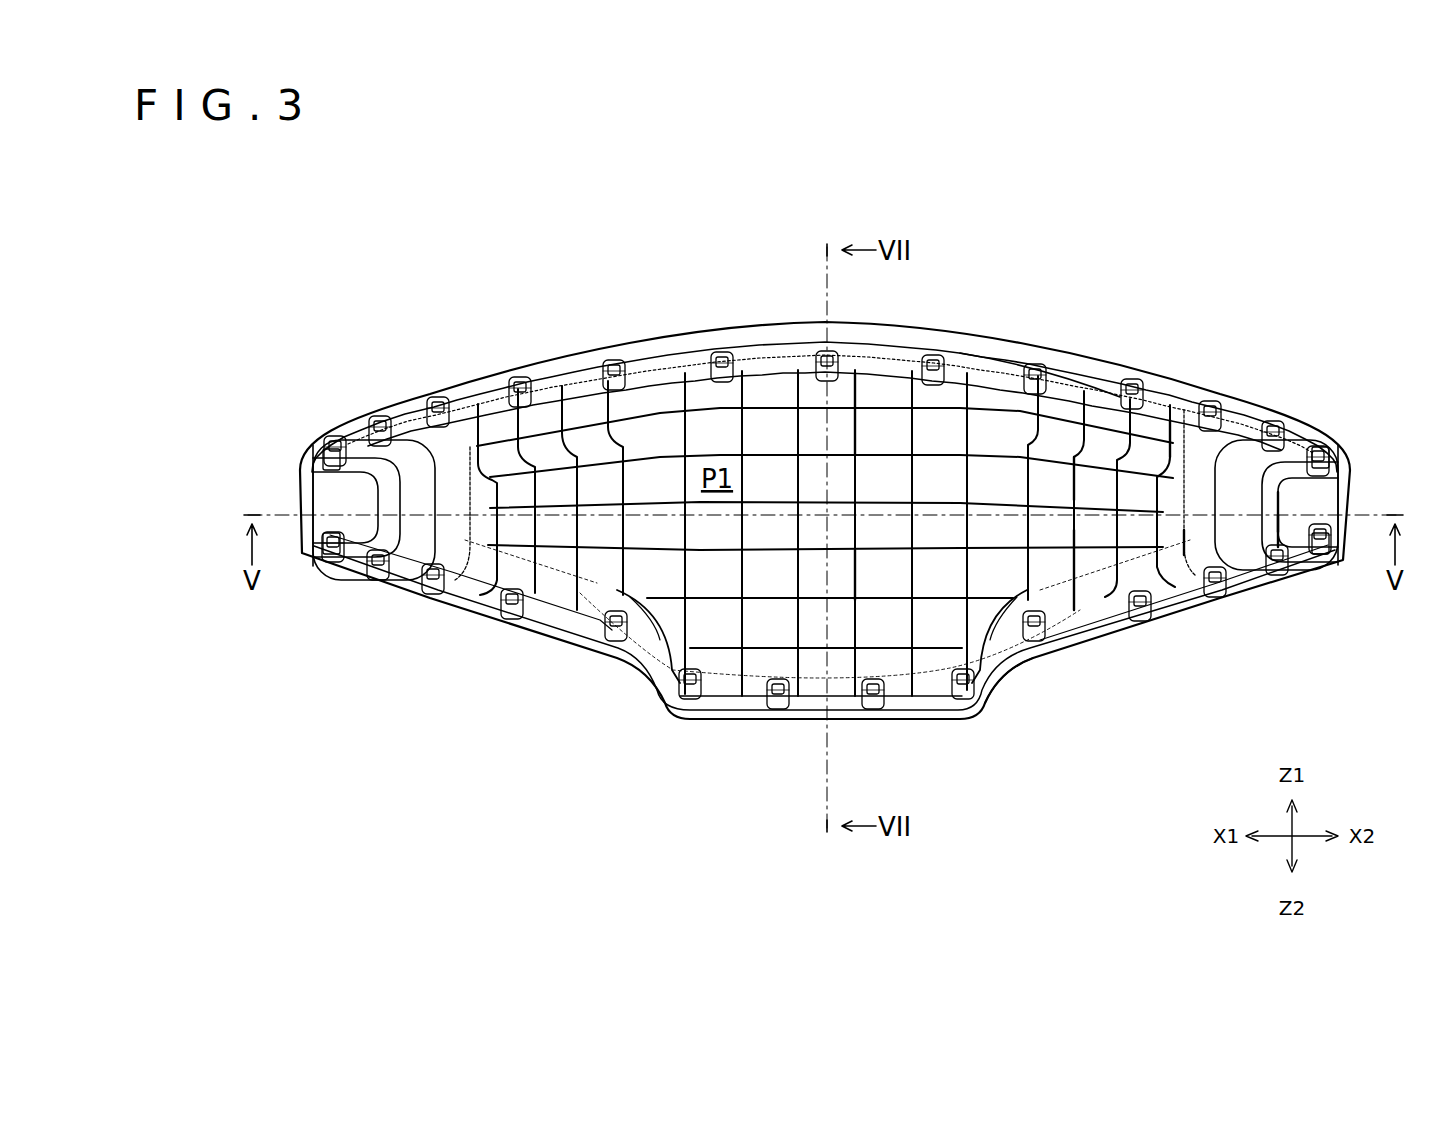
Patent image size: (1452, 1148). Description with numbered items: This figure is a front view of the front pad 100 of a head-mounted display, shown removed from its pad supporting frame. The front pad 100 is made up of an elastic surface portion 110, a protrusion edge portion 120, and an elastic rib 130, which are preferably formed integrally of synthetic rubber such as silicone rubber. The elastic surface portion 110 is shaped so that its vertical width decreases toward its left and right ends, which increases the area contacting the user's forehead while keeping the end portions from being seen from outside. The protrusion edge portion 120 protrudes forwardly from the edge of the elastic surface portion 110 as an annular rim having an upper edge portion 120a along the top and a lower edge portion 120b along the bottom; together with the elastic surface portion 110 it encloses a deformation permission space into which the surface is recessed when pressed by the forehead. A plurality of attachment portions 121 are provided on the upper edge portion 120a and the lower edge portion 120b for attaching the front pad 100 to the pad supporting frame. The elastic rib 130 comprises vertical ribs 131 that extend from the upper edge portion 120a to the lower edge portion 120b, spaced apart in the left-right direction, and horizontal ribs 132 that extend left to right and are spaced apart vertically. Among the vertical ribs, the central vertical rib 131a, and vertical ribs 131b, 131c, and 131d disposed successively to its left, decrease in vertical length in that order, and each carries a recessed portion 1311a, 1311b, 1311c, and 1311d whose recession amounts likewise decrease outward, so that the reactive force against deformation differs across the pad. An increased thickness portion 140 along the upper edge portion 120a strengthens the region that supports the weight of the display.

The front pad 100 is at (1281, 298).
The elastic surface portion 110 is at (772, 387).
The protrusion edge portion 120 is at (866, 348).
The upper edge portion 120a is at (1023, 357).
The lower edge portion 120b is at (1087, 648).
The attachment portions 121 is at (747, 363).
The elastic rib 130 is at (957, 493).
The vertical ribs 131 is at (675, 380).
The vertical rib 131a is at (865, 363).
The vertical rib 131b is at (1072, 400).
The vertical rib 131c is at (1180, 420).
The vertical rib 131d is at (1305, 487).
The recessed portion 1311a is at (857, 570).
The recessed portion 1311b is at (1083, 523).
The recessed portion 1311c is at (1230, 523).
The recessed portion 1311d is at (1290, 510).
The horizontal ribs 132 is at (768, 505).
The increased thickness portion 140 is at (705, 340).